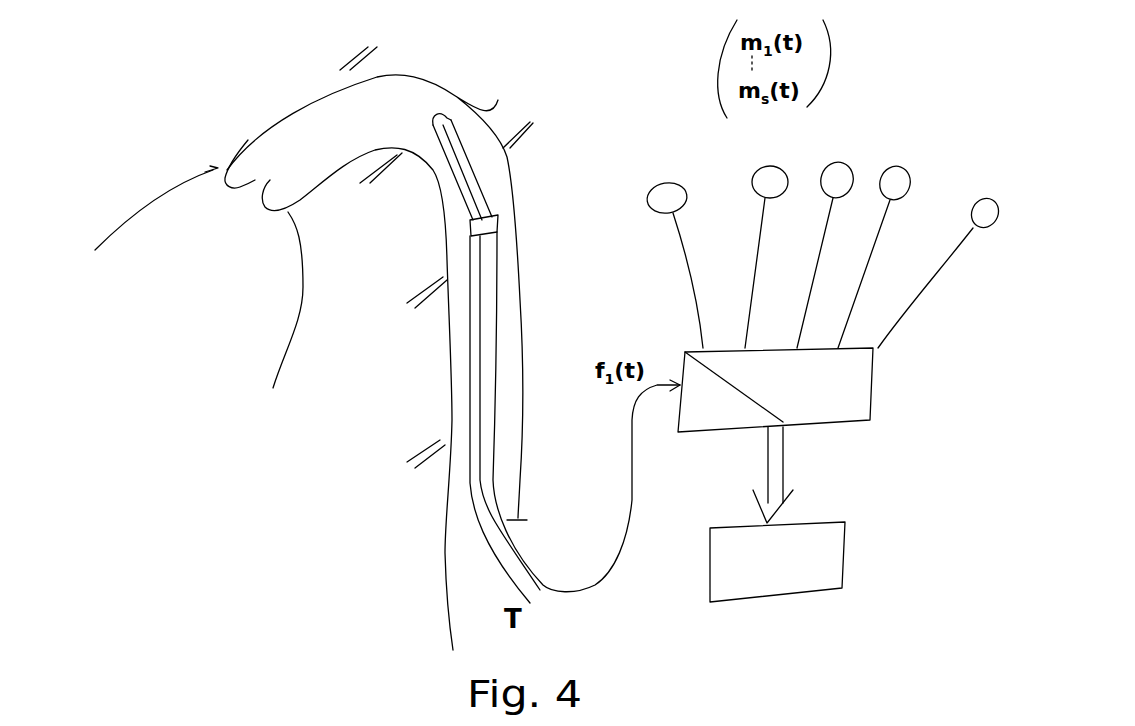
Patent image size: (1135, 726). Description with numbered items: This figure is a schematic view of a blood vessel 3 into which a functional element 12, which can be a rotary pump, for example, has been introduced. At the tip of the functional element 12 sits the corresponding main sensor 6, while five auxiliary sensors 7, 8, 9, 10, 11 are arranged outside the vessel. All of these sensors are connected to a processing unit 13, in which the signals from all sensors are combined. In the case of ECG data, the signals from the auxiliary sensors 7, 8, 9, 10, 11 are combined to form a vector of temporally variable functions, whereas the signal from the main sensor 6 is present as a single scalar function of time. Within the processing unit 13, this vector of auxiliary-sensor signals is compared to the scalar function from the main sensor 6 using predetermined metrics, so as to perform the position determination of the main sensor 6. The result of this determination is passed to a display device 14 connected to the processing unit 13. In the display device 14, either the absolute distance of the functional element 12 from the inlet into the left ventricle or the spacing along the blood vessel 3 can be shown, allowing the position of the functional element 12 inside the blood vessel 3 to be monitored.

The blood vessel 3 is at (518, 213).
The main sensor 6 is at (443, 113).
The functional element 12 is at (467, 135).
The auxiliary sensor 7 is at (663, 183).
The auxiliary sensor 8 is at (763, 170).
The auxiliary sensor 9 is at (838, 163).
The auxiliary sensor 10 is at (897, 167).
The auxiliary sensor 11 is at (987, 200).
The processing unit 13 is at (892, 392).
The display device 14 is at (843, 553).